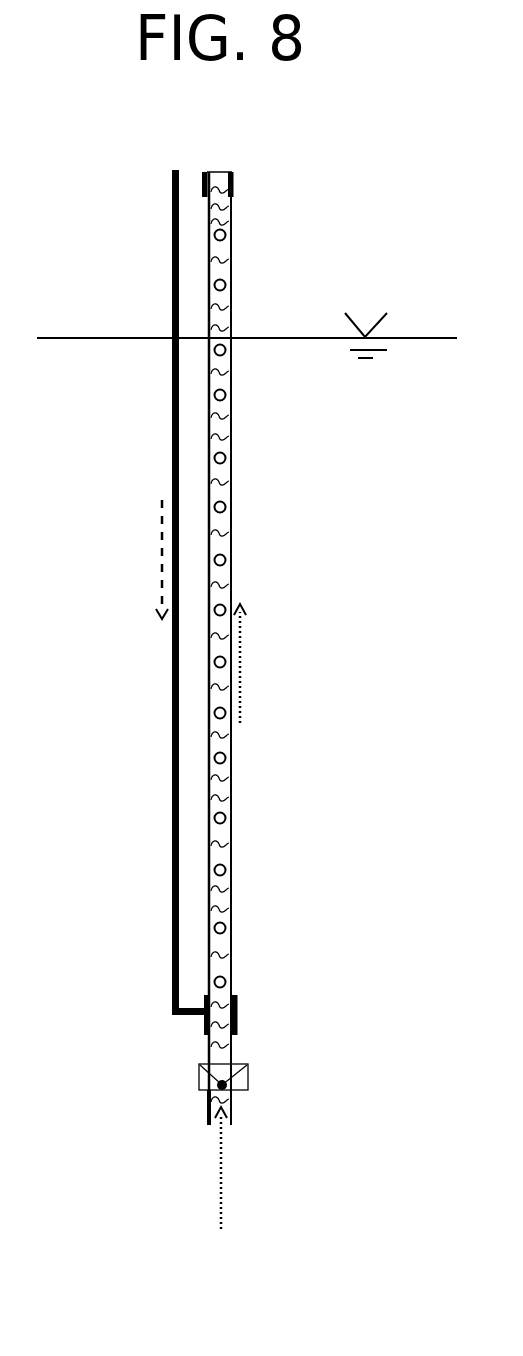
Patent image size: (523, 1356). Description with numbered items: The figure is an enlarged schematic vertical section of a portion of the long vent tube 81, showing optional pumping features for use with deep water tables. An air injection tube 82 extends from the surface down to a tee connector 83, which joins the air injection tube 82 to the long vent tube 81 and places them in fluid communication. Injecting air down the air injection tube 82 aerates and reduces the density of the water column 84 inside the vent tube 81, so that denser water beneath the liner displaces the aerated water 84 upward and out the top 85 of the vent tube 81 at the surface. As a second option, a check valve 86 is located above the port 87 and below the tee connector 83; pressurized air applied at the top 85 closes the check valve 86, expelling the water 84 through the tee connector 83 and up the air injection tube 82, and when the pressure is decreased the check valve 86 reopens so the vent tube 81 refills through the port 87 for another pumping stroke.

The long vent tube 81 is at (227, 824).
The air injection tube 82 is at (170, 979).
The tee connector 83 is at (237, 1022).
The water column 84 is at (226, 283).
The top of the long vent tube 85 is at (231, 177).
The check valve 86 is at (228, 1086).
The port 87 is at (231, 1132).